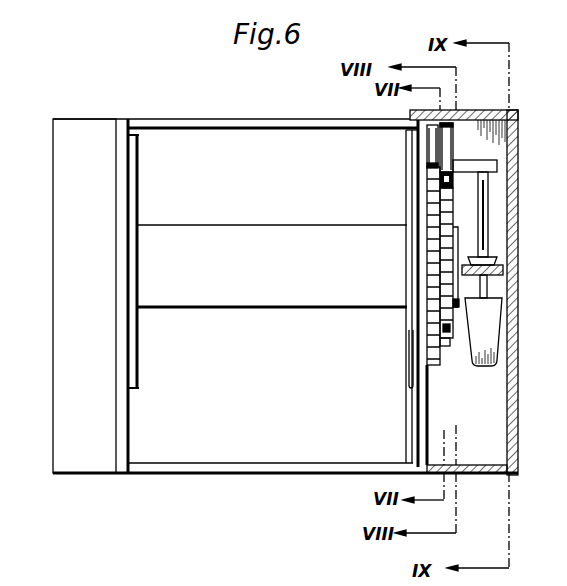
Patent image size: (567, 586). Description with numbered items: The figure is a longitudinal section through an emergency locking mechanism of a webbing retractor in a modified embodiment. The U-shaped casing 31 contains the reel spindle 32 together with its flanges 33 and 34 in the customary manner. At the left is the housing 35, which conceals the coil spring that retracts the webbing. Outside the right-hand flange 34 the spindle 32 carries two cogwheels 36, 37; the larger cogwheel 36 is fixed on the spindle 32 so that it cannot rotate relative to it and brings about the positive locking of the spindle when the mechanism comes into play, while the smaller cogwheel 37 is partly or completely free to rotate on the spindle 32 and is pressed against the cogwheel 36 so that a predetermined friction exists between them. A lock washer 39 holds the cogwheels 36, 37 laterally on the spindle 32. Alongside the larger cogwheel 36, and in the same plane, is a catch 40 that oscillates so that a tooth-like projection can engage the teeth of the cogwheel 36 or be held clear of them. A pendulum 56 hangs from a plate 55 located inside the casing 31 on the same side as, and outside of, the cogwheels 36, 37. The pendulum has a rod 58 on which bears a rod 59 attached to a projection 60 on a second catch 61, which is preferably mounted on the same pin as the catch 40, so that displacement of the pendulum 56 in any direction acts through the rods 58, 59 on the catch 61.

The casing 31 is at (417, 440).
The reel spindle 32 is at (210, 293).
The reel flange 33 is at (131, 346).
The reel flange 34 is at (409, 388).
The housing 35 is at (90, 133).
The cogwheel 36 is at (432, 315).
The cogwheel 37 is at (424, 346).
The lock washer 39 is at (445, 233).
The catch 40 is at (430, 147).
The plate 55 is at (504, 270).
The pendulum 56 is at (487, 325).
The pendulum rod 58 is at (484, 243).
The rod 59 is at (487, 185).
The projection 60 is at (488, 168).
The catch 61 is at (450, 148).